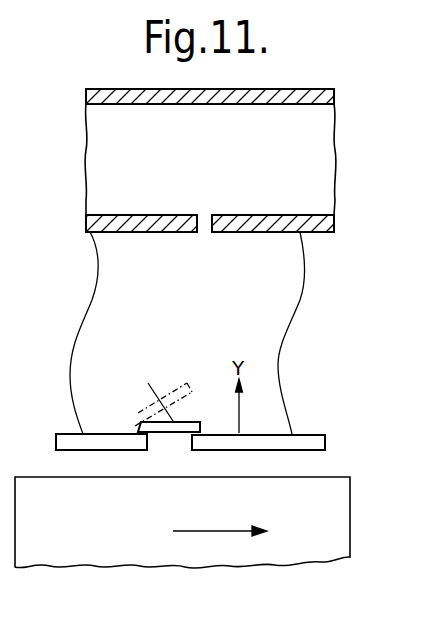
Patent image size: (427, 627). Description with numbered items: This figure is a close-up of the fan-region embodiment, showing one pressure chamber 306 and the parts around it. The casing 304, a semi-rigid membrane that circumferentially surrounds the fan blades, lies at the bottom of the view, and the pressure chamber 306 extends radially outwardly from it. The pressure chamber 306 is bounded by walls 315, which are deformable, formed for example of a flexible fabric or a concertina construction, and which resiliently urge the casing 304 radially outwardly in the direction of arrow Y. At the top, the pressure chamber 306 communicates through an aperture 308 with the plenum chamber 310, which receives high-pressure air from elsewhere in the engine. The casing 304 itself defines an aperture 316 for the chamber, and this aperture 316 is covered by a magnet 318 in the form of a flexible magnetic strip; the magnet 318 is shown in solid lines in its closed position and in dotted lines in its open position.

The casing 304 is at (325, 433).
The pressure chamber 306 is at (116, 326).
The aperture 308 is at (203, 213).
The plenum chamber 310 is at (113, 163).
The walls 315 is at (93, 291).
The aperture 316 is at (167, 440).
The magnet 318 is at (187, 383).